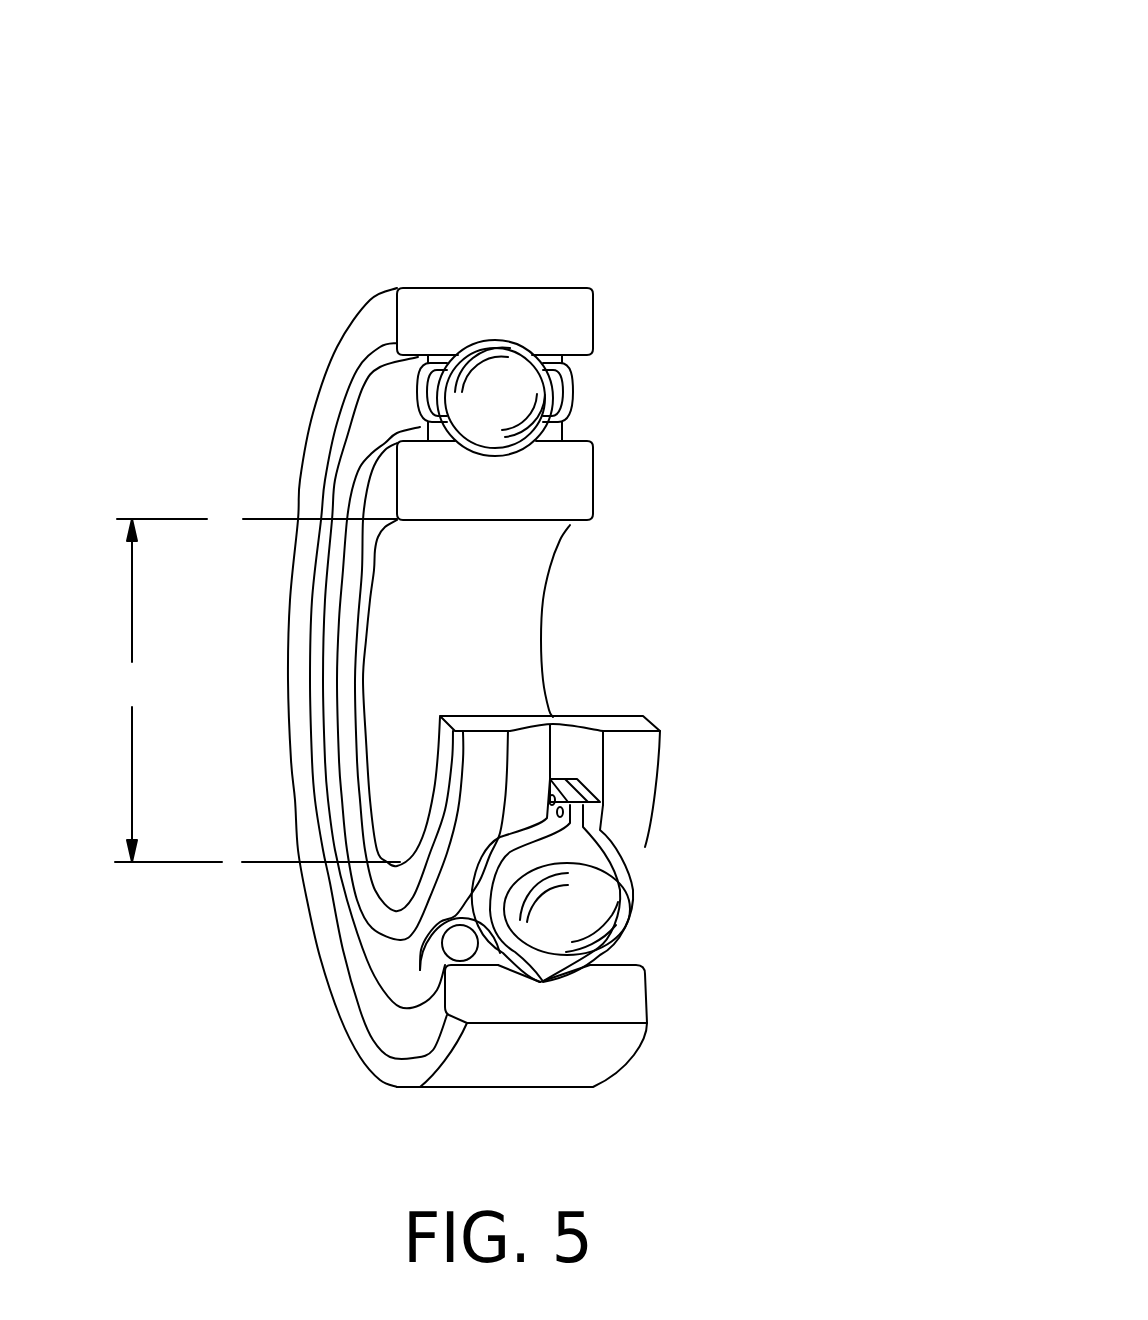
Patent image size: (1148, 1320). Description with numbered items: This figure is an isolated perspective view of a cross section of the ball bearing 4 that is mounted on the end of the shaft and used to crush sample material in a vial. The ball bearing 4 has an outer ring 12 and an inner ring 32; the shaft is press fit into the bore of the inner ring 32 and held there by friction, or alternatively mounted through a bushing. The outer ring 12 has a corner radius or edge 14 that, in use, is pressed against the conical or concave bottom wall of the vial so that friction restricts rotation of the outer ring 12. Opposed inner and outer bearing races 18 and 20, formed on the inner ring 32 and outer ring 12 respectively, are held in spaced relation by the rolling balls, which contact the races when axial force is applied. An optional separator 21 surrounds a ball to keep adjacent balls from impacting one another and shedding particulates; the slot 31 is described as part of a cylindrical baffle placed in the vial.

The ball bearing 4 is at (795, 163).
The outer ring 12 is at (420, 327).
The corner radius 14 is at (593, 293).
The inner bearing race 18 is at (580, 742).
The outer bearing race 20 is at (552, 983).
The separator 21 is at (623, 856).
The elongated slot 31 is at (257, 690).
The inner ring 32 is at (423, 478).